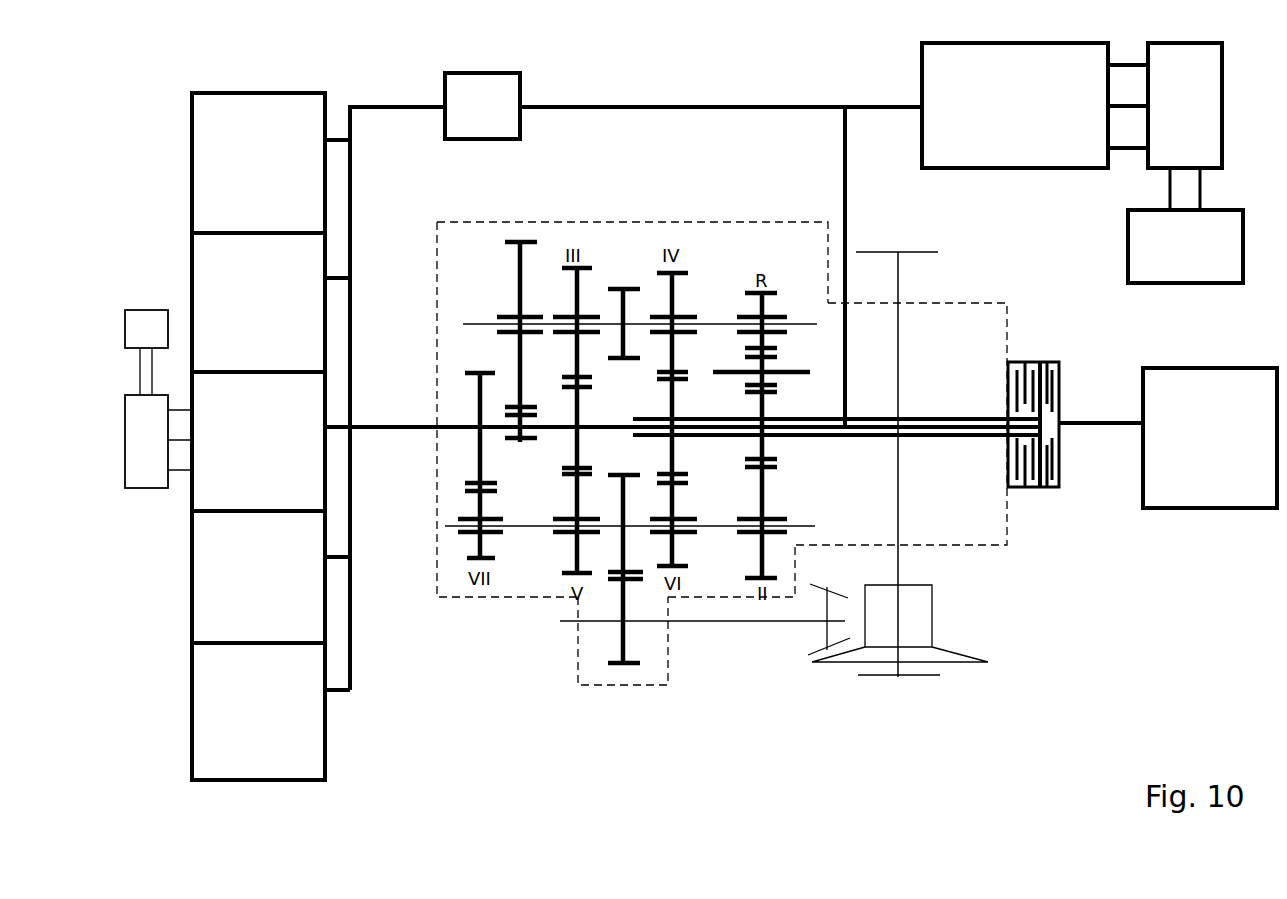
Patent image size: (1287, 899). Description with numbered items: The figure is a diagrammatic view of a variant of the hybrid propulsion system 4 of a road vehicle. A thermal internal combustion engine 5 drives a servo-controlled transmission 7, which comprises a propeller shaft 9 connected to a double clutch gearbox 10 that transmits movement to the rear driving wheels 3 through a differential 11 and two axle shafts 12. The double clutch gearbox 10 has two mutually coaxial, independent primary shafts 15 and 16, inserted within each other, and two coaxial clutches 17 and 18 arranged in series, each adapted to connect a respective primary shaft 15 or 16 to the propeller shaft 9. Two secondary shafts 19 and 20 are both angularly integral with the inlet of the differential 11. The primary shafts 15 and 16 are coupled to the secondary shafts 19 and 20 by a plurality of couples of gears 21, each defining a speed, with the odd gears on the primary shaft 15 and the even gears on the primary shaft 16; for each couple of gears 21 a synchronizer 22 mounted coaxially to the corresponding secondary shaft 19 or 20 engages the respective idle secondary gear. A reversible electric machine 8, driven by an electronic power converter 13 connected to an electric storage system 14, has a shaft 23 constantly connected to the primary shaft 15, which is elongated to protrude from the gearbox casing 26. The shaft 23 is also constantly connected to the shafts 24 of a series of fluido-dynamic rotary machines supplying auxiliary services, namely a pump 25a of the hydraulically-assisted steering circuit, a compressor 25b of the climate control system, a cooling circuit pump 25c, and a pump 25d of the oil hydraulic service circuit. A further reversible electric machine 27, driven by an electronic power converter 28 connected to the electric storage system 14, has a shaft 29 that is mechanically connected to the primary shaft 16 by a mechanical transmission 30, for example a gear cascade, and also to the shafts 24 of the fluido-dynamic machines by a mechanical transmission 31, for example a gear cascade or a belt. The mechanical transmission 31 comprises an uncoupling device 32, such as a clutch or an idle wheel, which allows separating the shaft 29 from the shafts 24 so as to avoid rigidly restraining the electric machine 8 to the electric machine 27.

The rear driving wheels 3 is at (918, 252).
The hybrid propulsion system 4 is at (1145, 582).
The thermal internal combustion engine 5 is at (1210, 438).
The servo-controlled transmission 7 is at (722, 680).
The reversible electric machine 8 is at (258, 441).
The propeller shaft 9 is at (1088, 420).
The double clutch gearbox 10 is at (543, 698).
The differential 11 is at (968, 637).
The axle shafts 12 is at (900, 292).
The electronic power converter 13 is at (158, 441).
The electric storage system 14 is at (684, 281).
The primary shaft 15 is at (555, 437).
The primary shaft 16 is at (730, 440).
The clutch 17 is at (1040, 352).
The clutch 18 is at (1033, 500).
The secondary shaft 19 is at (480, 318).
The secondary shaft 20 is at (525, 528).
The couple of gears 21 is at (505, 215).
The synchronizer 22 is at (532, 318).
The shaft of the electric machine 23 is at (415, 432).
The shafts of the fluido-dynamic machines 24 is at (340, 143).
The pump of the hydraulically-assisted steering circuit 25a is at (258, 163).
The compressor of the climate control system 25b is at (258, 302).
The cooling circuit pump 25c is at (258, 577).
The pump of the oil hydraulic service circuit 25d is at (258, 711).
The gearbox casing 26 is at (462, 600).
The further reversible electric machine 27 is at (1015, 105).
The electronic power converter 28 is at (1165, 105).
The shaft of the electric machine 29 is at (848, 103).
The mechanical transmission 30 is at (848, 195).
The mechanical transmission 31 is at (382, 105).
The uncoupling device 32 is at (482, 106).